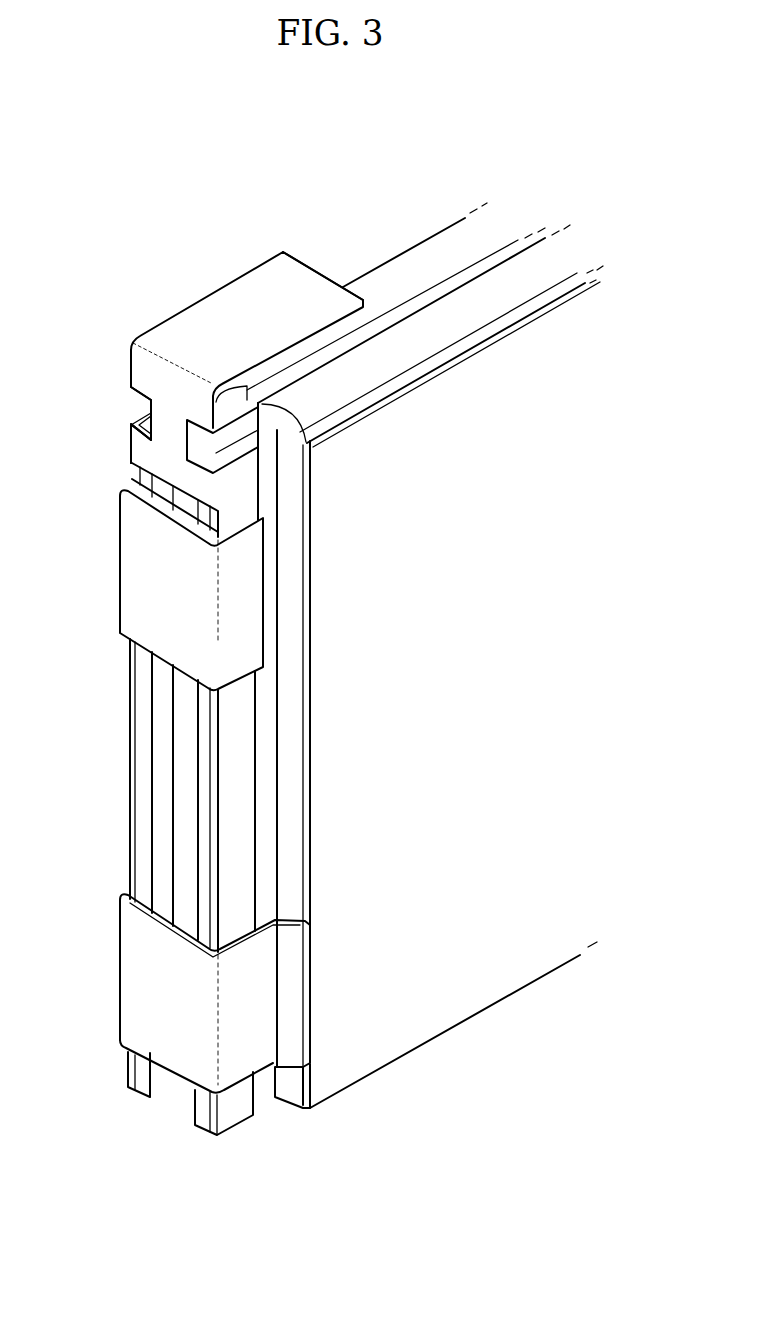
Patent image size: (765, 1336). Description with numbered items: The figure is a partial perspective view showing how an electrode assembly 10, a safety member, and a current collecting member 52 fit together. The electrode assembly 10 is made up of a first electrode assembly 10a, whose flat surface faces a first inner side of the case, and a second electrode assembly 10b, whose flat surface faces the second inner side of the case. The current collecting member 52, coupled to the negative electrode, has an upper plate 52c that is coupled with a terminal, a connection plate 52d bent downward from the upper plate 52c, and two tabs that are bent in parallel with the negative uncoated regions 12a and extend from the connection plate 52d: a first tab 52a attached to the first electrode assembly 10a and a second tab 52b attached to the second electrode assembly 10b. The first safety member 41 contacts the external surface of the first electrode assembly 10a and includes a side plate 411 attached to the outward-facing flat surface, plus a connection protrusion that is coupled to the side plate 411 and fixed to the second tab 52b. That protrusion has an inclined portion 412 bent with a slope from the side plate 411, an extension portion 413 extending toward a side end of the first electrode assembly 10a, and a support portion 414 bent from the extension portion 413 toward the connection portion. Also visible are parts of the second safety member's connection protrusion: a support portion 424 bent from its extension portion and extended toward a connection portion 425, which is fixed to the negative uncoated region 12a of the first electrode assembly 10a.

The electrode assembly 10 is at (423, 168).
The first electrode assembly 10a is at (440, 272).
The second electrode assembly 10b is at (362, 252).
The negative uncoated region 12a is at (205, 800).
The first safety member 41 is at (315, 1021).
The side plate 411 is at (440, 1000).
The inclined portion 412 is at (290, 1005).
The extension portion 413 is at (364, 1073).
The support portion 414 is at (150, 987).
The support portion 424 is at (155, 592).
The connection portion 425 is at (243, 610).
The current collecting member 52 is at (185, 295).
The first tab 52a is at (235, 1115).
The second tab 52b is at (128, 1072).
The upper plate 52c is at (262, 292).
The connection plate 52d is at (160, 453).